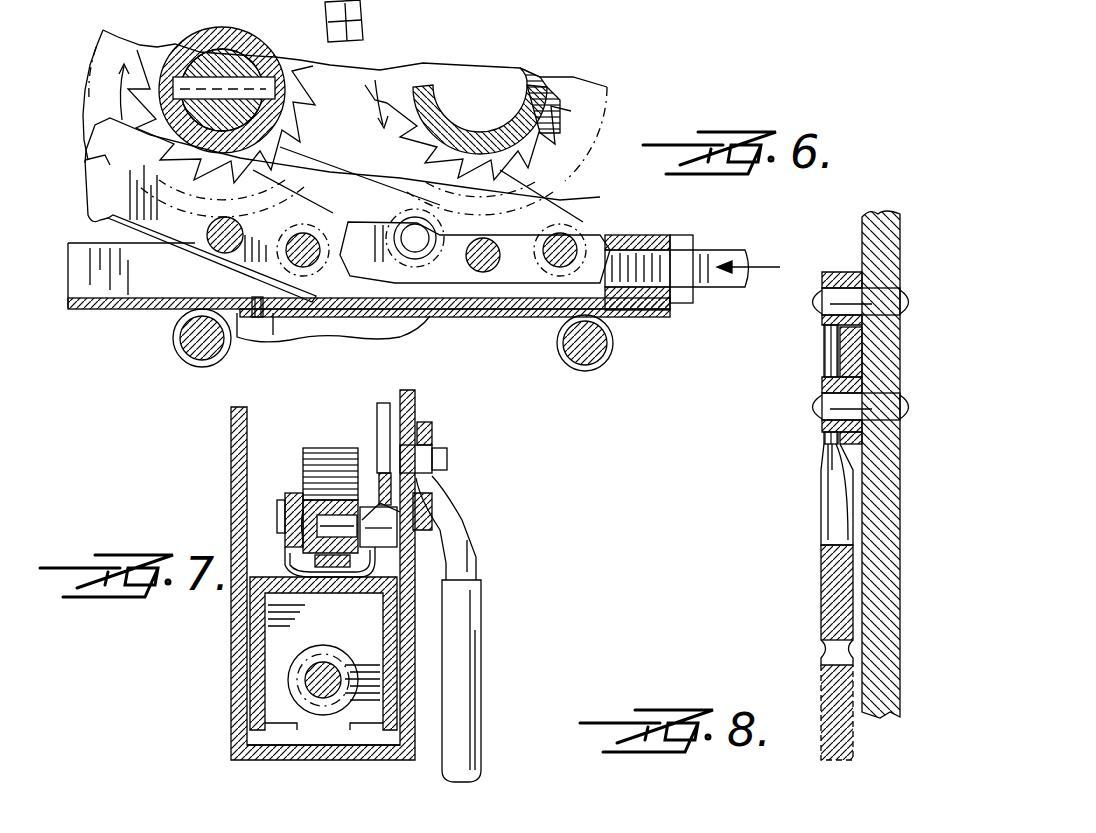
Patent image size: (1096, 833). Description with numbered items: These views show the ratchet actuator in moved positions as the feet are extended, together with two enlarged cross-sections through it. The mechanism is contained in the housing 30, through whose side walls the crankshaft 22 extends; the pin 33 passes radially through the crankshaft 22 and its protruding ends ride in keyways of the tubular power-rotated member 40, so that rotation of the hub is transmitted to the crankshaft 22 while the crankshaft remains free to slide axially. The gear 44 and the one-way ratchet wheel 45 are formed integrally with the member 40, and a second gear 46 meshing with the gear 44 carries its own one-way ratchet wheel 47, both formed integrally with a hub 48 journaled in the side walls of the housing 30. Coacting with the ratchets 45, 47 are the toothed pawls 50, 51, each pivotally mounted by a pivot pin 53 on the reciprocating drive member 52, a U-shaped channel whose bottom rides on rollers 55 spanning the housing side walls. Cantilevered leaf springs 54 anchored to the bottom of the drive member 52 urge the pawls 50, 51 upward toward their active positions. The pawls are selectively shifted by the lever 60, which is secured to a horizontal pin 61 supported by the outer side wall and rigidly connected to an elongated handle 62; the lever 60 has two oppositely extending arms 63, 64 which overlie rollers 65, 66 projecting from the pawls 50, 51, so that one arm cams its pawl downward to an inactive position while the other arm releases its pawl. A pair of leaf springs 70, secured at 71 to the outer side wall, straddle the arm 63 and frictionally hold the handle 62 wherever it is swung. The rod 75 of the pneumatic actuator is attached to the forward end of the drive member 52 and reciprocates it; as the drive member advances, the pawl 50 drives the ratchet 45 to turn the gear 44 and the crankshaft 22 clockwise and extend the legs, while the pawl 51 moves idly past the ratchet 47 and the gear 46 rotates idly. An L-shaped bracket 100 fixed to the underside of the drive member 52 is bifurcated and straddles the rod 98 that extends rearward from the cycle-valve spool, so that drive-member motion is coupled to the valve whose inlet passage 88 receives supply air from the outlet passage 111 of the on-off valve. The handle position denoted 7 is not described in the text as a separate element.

In FIG. 6, the handle 7 is at (325, 8).
In FIG. 6, the crankshaft 22 is at (200, 52).
In FIG. 7, the housing 30 is at (236, 452).
In FIG. 8, the housing 30 is at (893, 488).
In FIG. 6, the pin 33 is at (245, 78).
In FIG. 6, the power-rotated member 40 is at (162, 50).
In FIG. 6, the gear 44 is at (98, 52).
In FIG. 6, the one-way ratchet wheel 45 is at (95, 125).
In FIG. 6, the second gear 46 is at (612, 123).
In FIG. 6, the one-way ratchet wheel 47 is at (573, 196).
In FIG. 6, the hub 48 is at (560, 75).
In FIG. 6, the pawl 50 is at (98, 158).
In FIG. 6, the pawl 51 is at (375, 208).
In FIG. 7, the pawl 51 is at (318, 448).
In FIG. 6, the reciprocating drive member 52 is at (125, 317).
In FIG. 7, the reciprocating drive member 52 is at (272, 555).
In FIG. 6, the pivot pin 53 is at (580, 238).
In FIG. 7, the pivot pin 53 is at (285, 507).
In FIG. 6, the cantilevered leaf spring 54 is at (193, 265).
In FIG. 7, the cantilevered leaf spring 54 is at (330, 592).
In FIG. 6, the roller 55 is at (175, 345).
In FIG. 7, the lever 60 is at (478, 548).
In FIG. 7, the horizontal pin 61 is at (412, 452).
In FIG. 6, the handle 62 is at (365, 15).
In FIG. 7, the handle 62 is at (485, 678).
In FIG. 8, the arm 63 is at (823, 587).
In FIG. 7, the arm 64 is at (397, 488).
In FIG. 6, the roller 65 is at (228, 215).
In FIG. 6, the roller 66 is at (487, 300).
In FIG. 7, the roller 66 is at (425, 508).
In FIG. 8, the leaf spring 70 is at (821, 522).
In FIG. 8, the spring securing point 71 is at (878, 295).
In FIG. 6, the rod 75 is at (720, 250).
In FIG. 6, the inlet passage 88 is at (735, 0).
In FIG. 7, the rod 98 is at (305, 672).
In FIG. 6, the L-shaped bracket 100 is at (520, 0).
In FIG. 7, the L-shaped bracket 100 is at (250, 682).
In FIG. 6, the outlet passage 111 is at (700, 0).